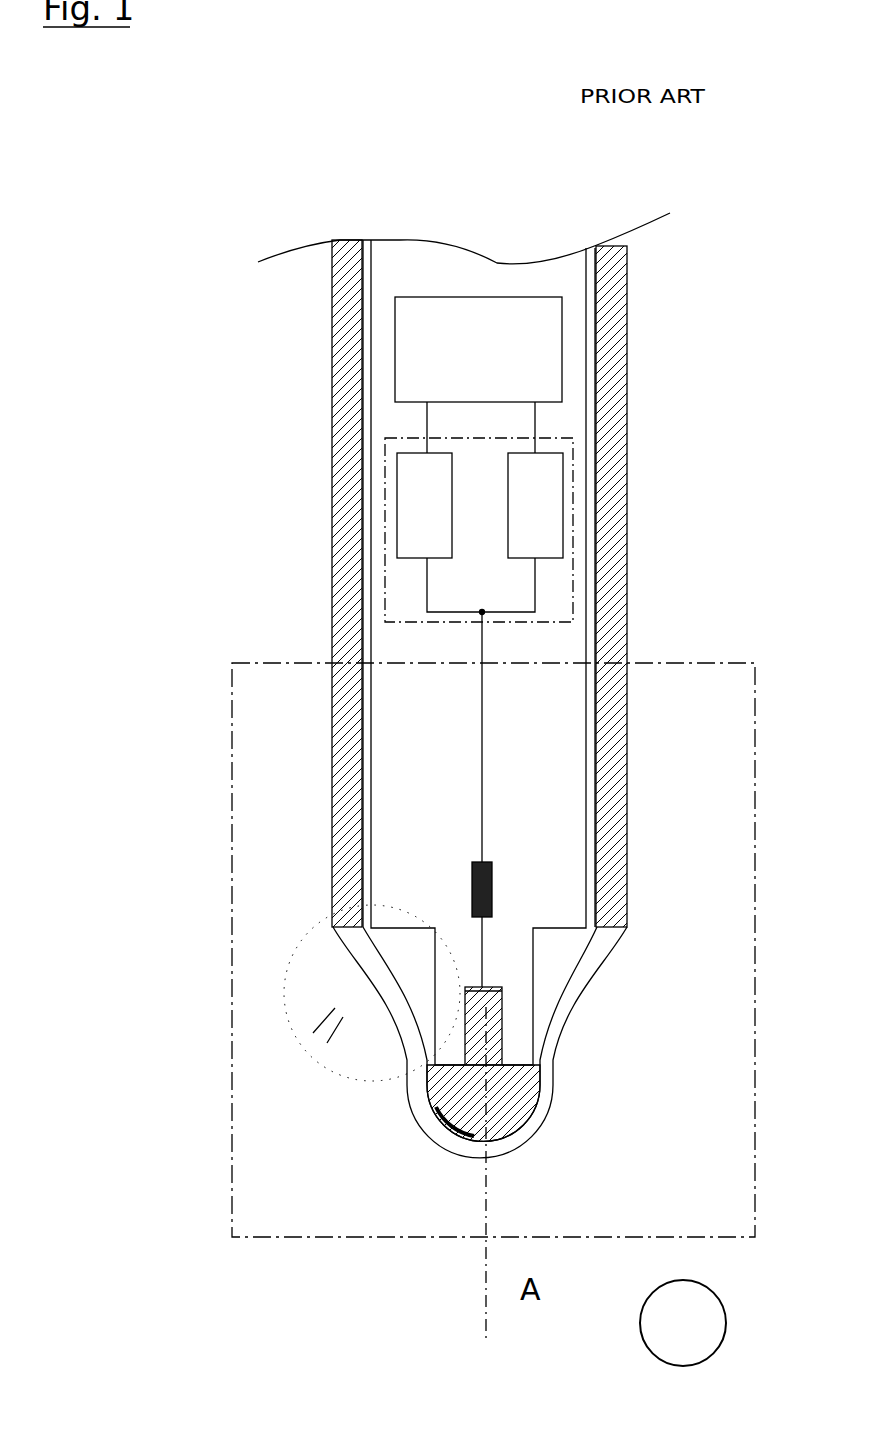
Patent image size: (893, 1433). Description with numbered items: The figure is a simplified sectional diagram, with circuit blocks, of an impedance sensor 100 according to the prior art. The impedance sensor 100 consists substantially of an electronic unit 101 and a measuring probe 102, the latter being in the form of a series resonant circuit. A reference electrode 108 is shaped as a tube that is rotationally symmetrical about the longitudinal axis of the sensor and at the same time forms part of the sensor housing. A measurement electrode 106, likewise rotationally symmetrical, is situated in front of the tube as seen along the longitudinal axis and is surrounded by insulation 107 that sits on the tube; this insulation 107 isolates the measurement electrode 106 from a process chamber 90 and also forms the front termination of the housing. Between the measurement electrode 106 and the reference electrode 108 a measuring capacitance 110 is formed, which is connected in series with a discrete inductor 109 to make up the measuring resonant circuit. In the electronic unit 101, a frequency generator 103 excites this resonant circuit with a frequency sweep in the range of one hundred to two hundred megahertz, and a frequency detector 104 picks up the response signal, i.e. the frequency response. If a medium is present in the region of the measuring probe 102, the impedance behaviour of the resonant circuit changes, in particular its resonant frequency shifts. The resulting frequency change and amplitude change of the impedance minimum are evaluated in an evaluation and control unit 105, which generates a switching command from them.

The impedance sensor 100 is at (200, 190).
The electronic unit 101 is at (559, 512).
The measuring probe 102 is at (383, 1213).
The frequency generator 103 is at (535, 505).
The frequency detector 104 is at (424, 505).
The evaluation and control unit 105 is at (478, 349).
The measurement electrode 106 is at (522, 1118).
The insulation 107 is at (583, 977).
The reference electrode 108 is at (626, 883).
The discrete inductor 109 is at (493, 885).
The measuring capacitance 110 is at (320, 1043).
The process chamber 90 is at (683, 1323).